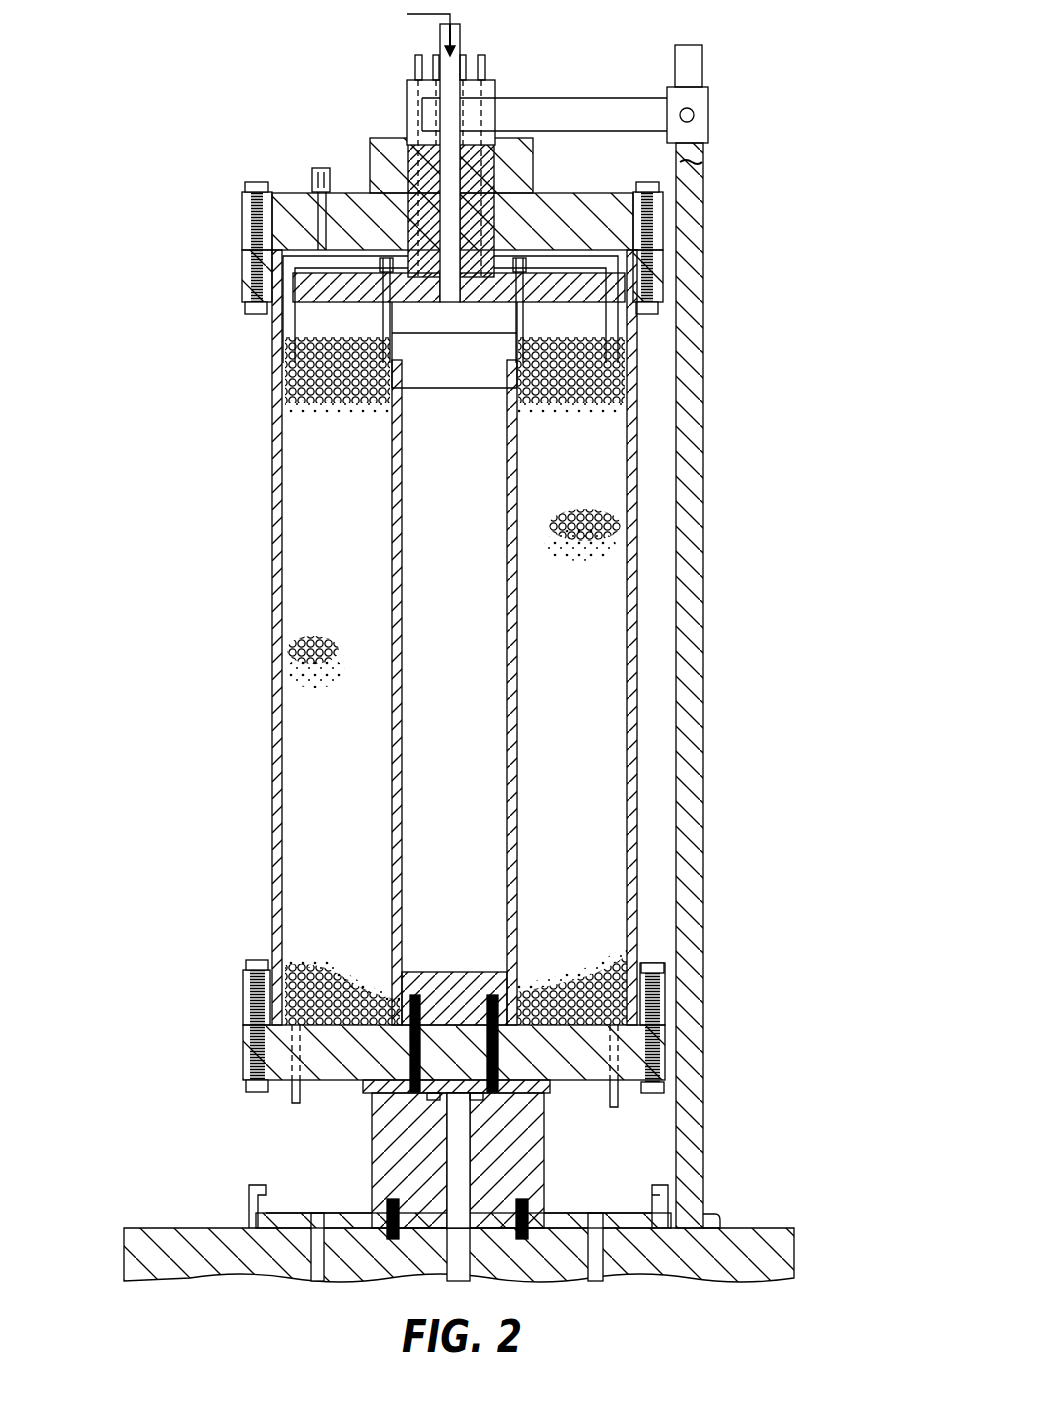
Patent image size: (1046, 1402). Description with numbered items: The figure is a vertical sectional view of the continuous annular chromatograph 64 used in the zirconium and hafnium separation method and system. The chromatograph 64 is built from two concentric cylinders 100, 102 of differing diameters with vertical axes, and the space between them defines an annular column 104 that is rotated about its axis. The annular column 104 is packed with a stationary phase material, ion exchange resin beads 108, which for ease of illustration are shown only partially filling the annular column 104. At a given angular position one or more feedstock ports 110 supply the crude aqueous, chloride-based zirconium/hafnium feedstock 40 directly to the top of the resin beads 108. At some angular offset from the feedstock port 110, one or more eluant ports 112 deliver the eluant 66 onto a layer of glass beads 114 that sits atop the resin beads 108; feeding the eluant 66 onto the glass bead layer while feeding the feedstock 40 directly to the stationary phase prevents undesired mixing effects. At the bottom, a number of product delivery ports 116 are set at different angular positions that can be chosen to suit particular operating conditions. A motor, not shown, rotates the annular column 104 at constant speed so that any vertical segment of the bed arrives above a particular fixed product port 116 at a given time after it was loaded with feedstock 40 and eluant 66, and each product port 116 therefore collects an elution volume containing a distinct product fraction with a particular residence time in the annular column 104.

The crude aqueous, chloride-based zirconium/hafnium feedstock 40 is at (432, 48).
The continuous annular chromatograph 64 is at (205, 1087).
The eluant 66 is at (481, 53).
The concentric cylinder 100 is at (272, 742).
The concentric cylinder 102 is at (398, 685).
The annular column 104 is at (297, 480).
The ion exchange resin beads 108 is at (598, 398).
The feedstock port 110 is at (430, 67).
The eluant port 112 is at (487, 68).
The glass beads 114 is at (318, 333).
The product delivery port 116 is at (300, 1095).